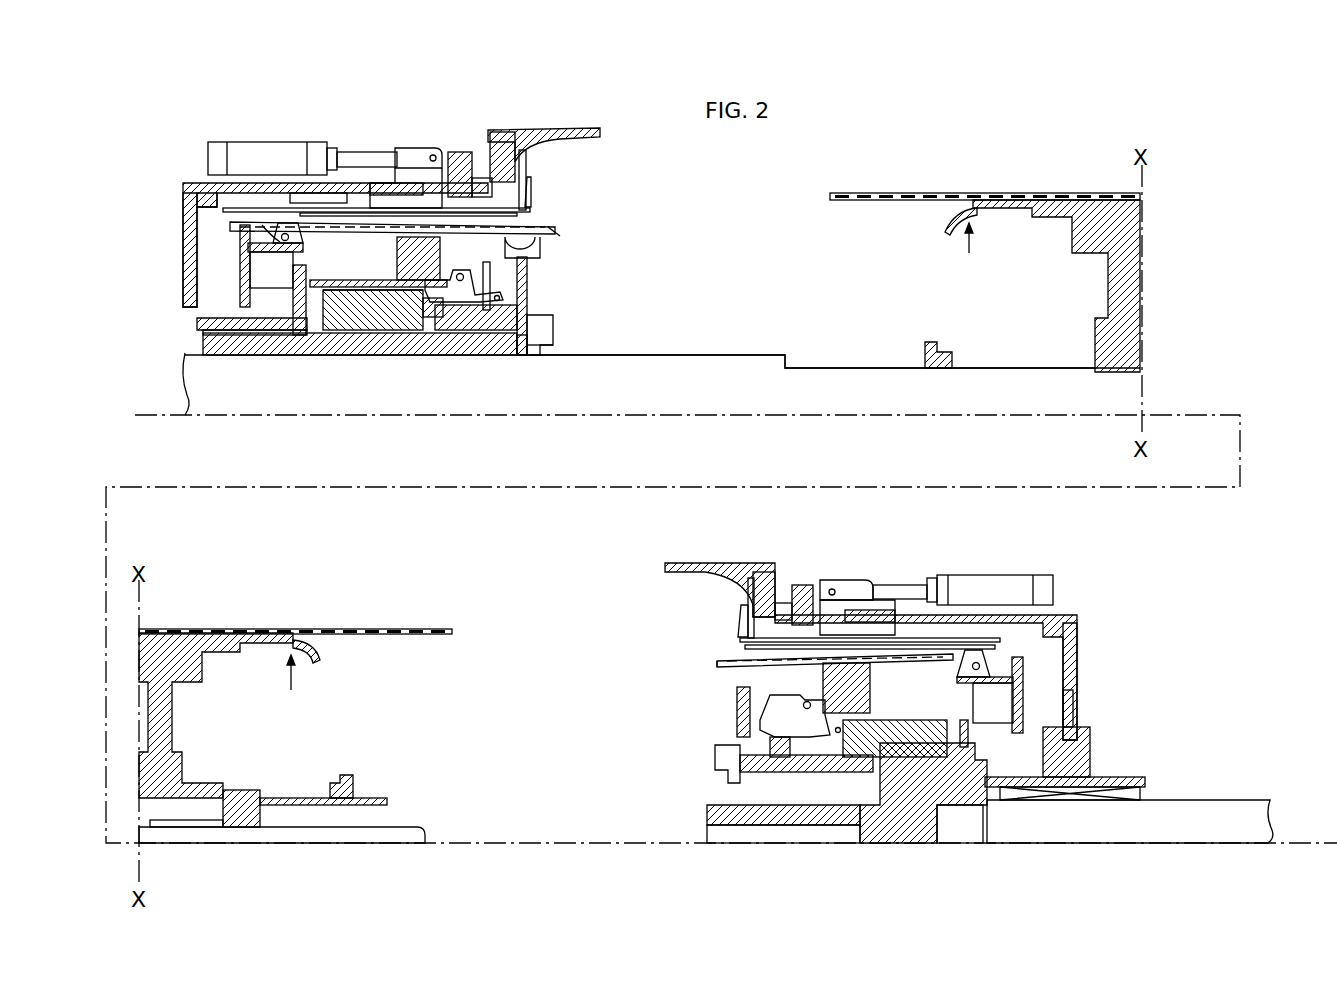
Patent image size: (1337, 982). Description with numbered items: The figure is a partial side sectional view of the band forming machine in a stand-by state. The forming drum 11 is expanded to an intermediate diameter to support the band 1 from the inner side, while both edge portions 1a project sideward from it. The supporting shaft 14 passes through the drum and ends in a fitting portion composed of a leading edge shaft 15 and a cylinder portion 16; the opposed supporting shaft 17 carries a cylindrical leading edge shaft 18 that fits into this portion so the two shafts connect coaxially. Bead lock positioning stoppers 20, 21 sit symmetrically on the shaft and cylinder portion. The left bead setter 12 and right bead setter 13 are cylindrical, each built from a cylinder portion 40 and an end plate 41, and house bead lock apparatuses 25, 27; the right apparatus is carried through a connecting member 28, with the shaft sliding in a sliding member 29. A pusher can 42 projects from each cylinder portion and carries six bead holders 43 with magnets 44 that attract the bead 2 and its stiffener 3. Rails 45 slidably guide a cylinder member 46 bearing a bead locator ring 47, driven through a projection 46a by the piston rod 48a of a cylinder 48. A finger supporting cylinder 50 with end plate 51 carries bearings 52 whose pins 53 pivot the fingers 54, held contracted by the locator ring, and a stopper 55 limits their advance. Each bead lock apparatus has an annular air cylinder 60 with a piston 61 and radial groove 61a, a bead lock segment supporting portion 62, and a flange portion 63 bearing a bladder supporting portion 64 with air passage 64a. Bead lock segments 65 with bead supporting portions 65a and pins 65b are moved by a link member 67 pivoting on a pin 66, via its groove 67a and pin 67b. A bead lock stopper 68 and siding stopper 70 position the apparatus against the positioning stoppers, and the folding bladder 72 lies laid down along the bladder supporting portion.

The band 1 is at (1068, 200).
The edge portions 1a is at (870, 193).
The bead 2 is at (530, 208).
The stiffener 3 is at (533, 185).
The forming drum 11 is at (1000, 208).
The left bead setter 12 is at (336, 126).
The right bead setter 13 is at (1003, 554).
The supporting shaft 14 is at (745, 355).
The leading edge shaft 15 is at (405, 827).
The cylinder portion 16 is at (300, 798).
The supporting shaft 17 is at (1240, 800).
The leading edge shaft 18 is at (707, 812).
The bead lock positioning stopper 20 is at (930, 342).
The bead lock positioning stopper 21 is at (348, 775).
The bead lock apparatus 25 is at (641, 240).
The bead lock apparatus 27 is at (655, 728).
The connecting member 28 is at (962, 805).
The sliding member 29 is at (1070, 800).
The cylinder portion 40 is at (237, 184).
The end plate 41 is at (183, 250).
The pusher can 42 is at (598, 128).
The bead holders 43 is at (503, 132).
The magnet 44 is at (527, 177).
The rails 45 is at (300, 193).
The cylinder member 46 is at (405, 185).
The projection 46a is at (452, 152).
The bead locator ring 47 is at (520, 214).
The cylinder 48 is at (258, 142).
The piston rod 48a is at (360, 152).
The finger supporting cylinder 50 is at (268, 232).
The end plate 51 is at (240, 278).
The bearings 52 is at (305, 248).
The pins 53 is at (283, 227).
The fingers 54 is at (555, 228).
The stopper 55 is at (270, 282).
The annular air cylinder 60 is at (305, 350).
The annular piston 61 is at (345, 330).
The radial groove 61a is at (397, 292).
The bead lock segment supporting portion 62 is at (490, 355).
The flange portion 63 is at (397, 268).
The bladder supporting portion 64 is at (397, 247).
The air passage 64a is at (197, 322).
The bead lock segments 65 is at (527, 295).
The bead supporting portion 65a is at (538, 250).
The pin 65b is at (525, 357).
The pin 66 is at (490, 280).
The link member 67 is at (460, 302).
The groove 67a is at (553, 350).
The pin 67b is at (435, 317).
The bead lock stopper 68 is at (553, 335).
The siding stopper 70 is at (520, 355).
The folding bladder 72 is at (556, 233).